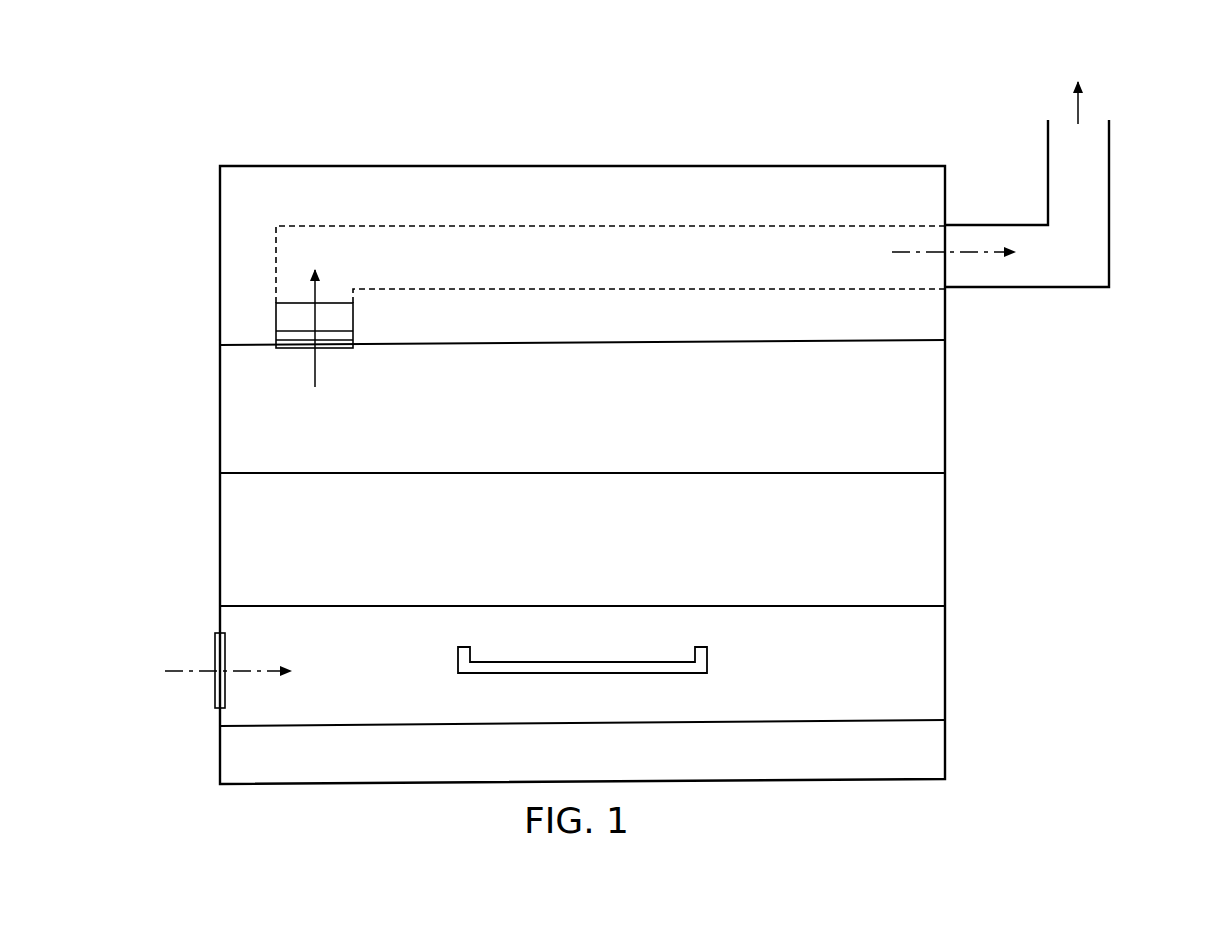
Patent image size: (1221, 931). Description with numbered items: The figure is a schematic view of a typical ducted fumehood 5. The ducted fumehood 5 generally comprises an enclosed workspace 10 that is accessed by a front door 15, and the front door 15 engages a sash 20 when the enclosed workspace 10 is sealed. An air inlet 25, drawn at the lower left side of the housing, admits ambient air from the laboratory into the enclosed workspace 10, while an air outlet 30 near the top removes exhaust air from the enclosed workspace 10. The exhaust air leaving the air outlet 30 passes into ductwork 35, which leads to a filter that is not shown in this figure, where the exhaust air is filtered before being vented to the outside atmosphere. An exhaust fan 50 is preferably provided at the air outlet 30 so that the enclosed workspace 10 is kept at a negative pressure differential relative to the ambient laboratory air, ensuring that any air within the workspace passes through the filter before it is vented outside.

The ducted fumehood 5 is at (166, 206).
The enclosed workspace 10 is at (576, 526).
The front door 15 is at (494, 686).
The sash 20 is at (796, 717).
The air inlet 25 is at (210, 705).
The air outlet 30 is at (290, 359).
The ductwork 35 is at (1114, 168).
The exhaust fan 50 is at (359, 322).